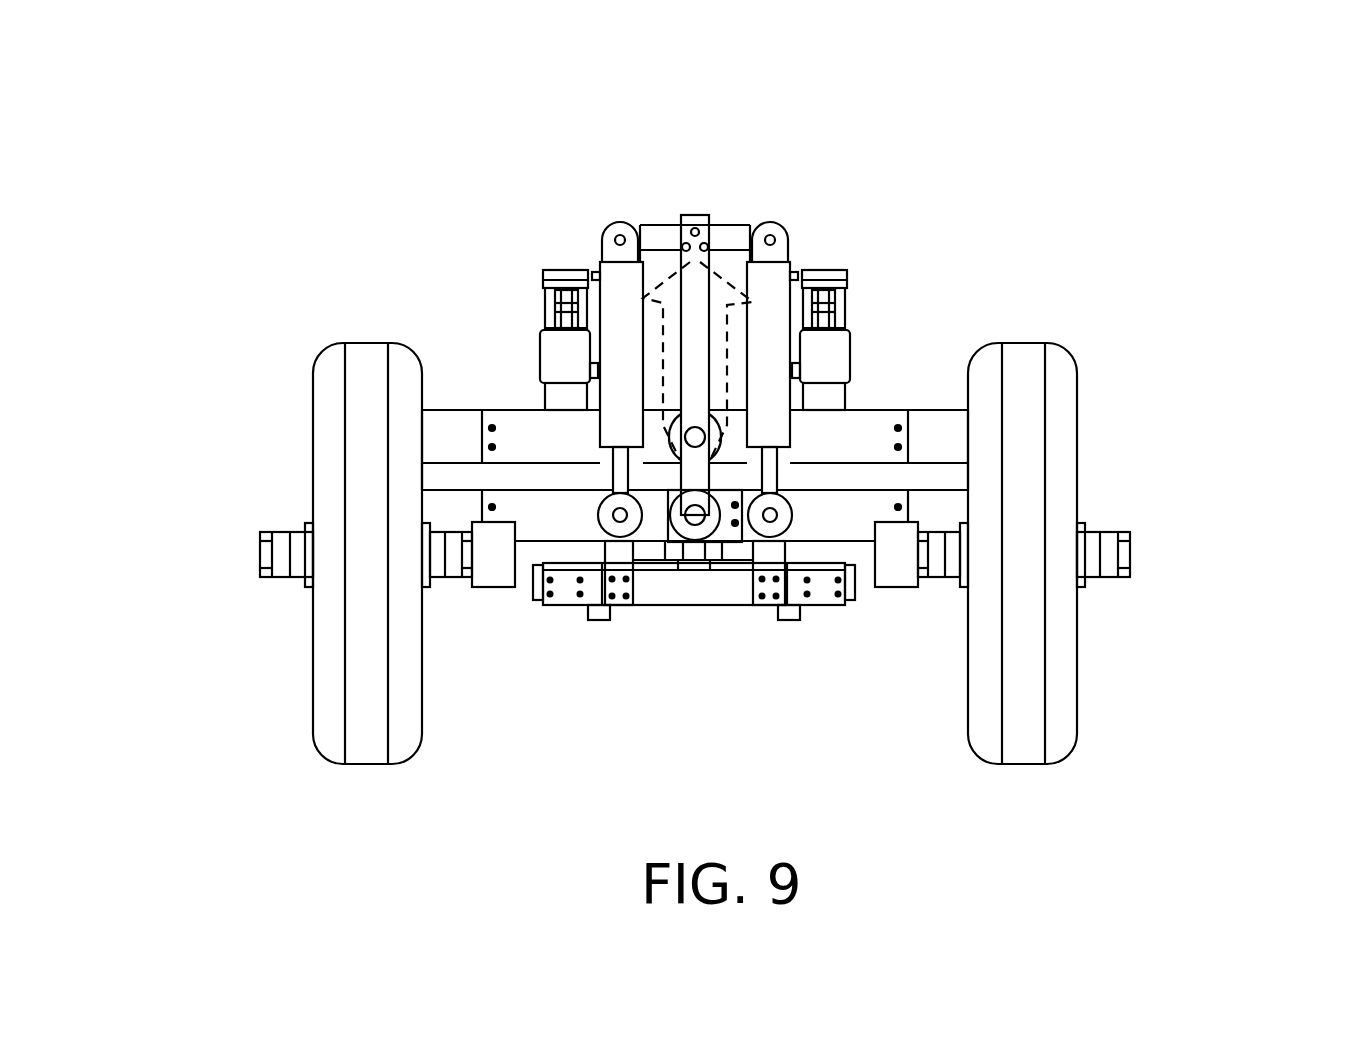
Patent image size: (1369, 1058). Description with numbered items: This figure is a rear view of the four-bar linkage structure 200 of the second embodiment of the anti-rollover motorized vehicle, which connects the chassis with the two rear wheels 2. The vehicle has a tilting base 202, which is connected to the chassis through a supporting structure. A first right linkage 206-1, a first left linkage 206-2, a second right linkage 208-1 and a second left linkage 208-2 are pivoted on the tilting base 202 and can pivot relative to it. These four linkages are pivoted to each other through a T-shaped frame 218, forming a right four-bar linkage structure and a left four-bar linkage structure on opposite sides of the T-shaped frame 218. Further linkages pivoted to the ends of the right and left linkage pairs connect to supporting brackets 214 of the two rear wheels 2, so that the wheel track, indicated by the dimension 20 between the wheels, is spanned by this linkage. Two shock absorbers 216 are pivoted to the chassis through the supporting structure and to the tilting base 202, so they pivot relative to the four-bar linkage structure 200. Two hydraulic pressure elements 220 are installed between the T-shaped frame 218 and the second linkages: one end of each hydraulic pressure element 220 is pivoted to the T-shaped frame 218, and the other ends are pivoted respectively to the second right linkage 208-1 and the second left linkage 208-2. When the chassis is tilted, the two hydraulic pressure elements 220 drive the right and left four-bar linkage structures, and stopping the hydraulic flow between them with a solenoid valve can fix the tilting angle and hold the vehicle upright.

The four-bar linkage structure 200 is at (262, 117).
The rear wheel 2 is at (304, 721).
The wheel track width 20 is at (994, 763).
The tilting base 202 is at (667, 607).
The first right linkage 206-1 is at (887, 397).
The first left linkage 206-2 is at (492, 397).
The second right linkage 208-1 is at (929, 495).
The second left linkage 208-2 is at (463, 497).
The supporting bracket 214 is at (241, 555).
The shock absorber 216 is at (538, 342).
The T-shaped frame 218 is at (689, 389).
The hydraulic pressure element 220 is at (767, 273).